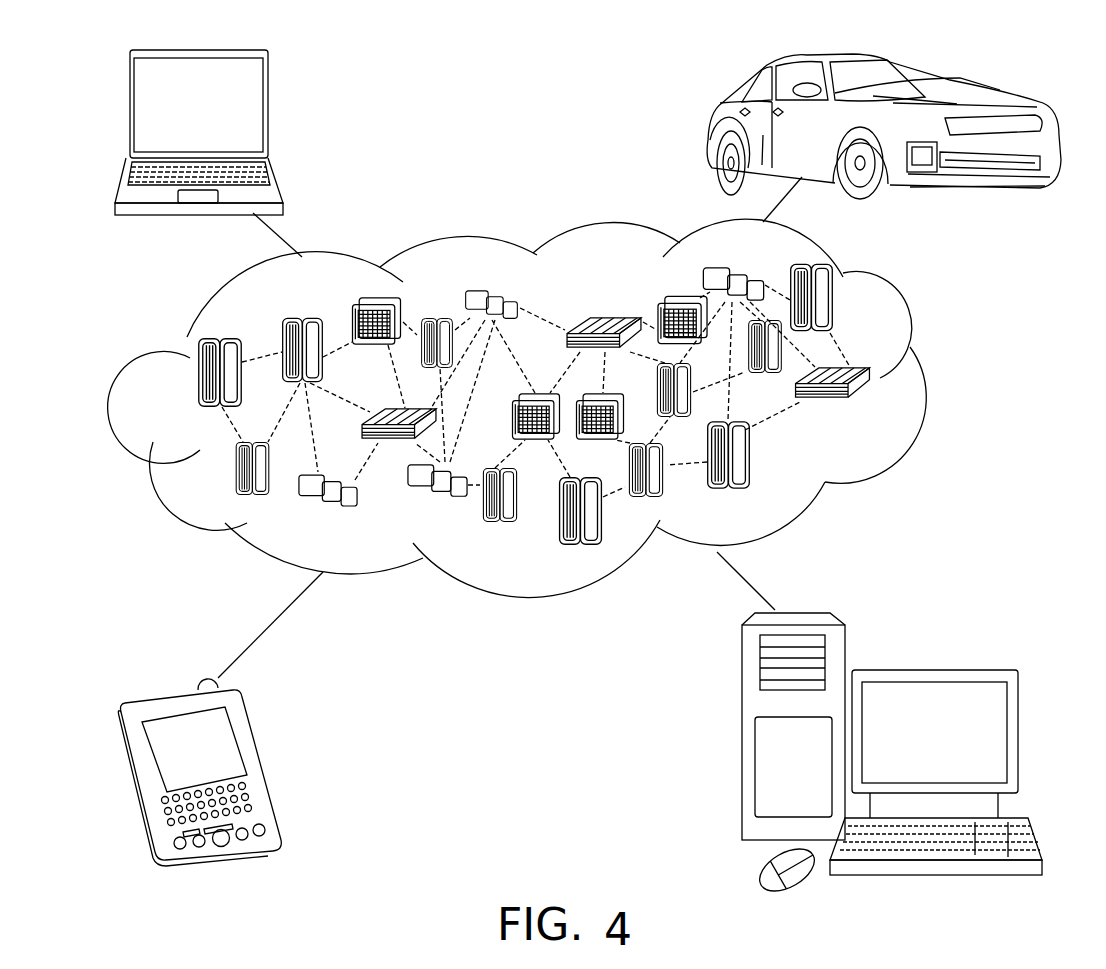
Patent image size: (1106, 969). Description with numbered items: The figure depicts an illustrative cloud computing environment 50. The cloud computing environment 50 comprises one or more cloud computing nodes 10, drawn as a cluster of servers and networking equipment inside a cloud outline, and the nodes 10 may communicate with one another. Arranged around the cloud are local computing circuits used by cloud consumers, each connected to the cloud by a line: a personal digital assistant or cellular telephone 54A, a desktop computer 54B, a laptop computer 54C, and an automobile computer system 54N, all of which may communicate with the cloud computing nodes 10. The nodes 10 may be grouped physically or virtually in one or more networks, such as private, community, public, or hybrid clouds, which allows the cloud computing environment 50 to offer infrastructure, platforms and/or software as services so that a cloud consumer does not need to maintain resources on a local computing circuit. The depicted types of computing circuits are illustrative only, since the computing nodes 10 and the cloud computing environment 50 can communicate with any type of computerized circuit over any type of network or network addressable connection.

The cloud computing nodes 10 is at (875, 413).
The cloud computing environment 50 is at (933, 383).
The personal digital assistant (PDA) or cellular telephone 54A is at (257, 762).
The desktop computer 54B is at (930, 670).
The laptop computer 54C is at (268, 112).
The automobile computer system 54N is at (710, 130).